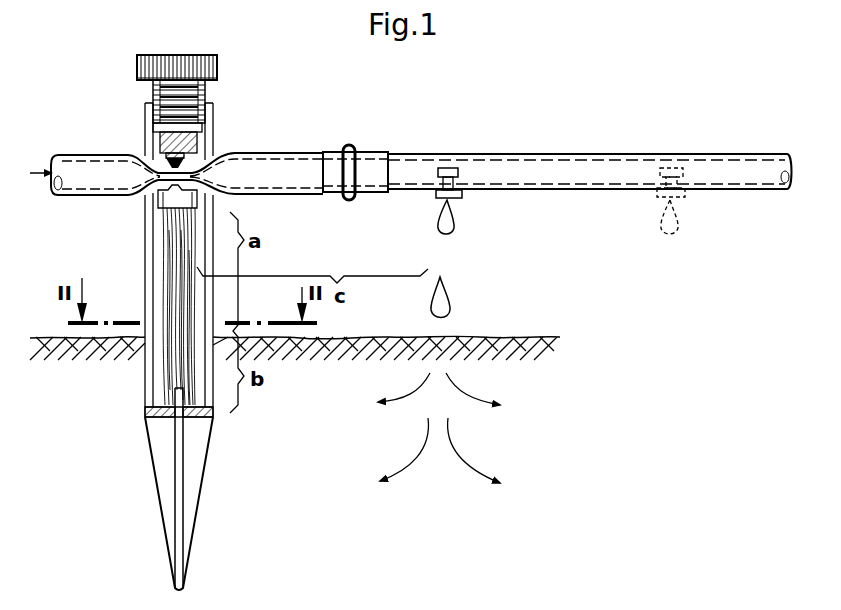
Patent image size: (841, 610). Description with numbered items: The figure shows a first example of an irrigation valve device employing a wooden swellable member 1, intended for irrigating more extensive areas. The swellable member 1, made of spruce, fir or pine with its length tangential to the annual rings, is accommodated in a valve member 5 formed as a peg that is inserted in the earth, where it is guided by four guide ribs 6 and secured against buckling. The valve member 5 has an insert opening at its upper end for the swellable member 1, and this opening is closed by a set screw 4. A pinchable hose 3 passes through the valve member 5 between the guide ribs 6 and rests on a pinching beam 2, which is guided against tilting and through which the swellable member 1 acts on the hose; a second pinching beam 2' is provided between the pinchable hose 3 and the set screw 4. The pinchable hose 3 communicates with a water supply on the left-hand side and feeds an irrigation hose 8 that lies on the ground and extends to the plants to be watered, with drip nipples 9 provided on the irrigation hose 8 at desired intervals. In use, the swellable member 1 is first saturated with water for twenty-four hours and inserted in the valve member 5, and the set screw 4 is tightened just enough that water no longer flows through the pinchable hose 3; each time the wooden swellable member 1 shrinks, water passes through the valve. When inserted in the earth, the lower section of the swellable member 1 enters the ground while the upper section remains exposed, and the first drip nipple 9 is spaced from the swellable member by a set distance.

The swellable member 1 is at (176, 241).
The pinching beam 2 is at (157, 205).
The second pinching beam 2' is at (157, 139).
The pinchable hose 3 is at (97, 166).
The set screw 4 is at (147, 70).
The valve member 5 is at (164, 474).
The guide ribs 6 is at (152, 288).
The irrigation hose 8 is at (552, 168).
The drip nipples 9 is at (457, 195).